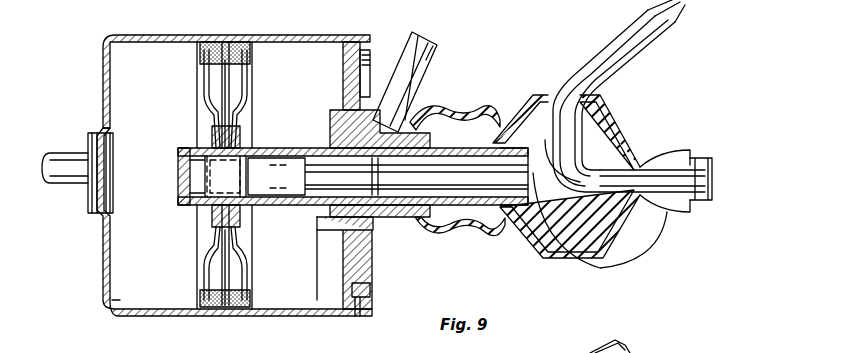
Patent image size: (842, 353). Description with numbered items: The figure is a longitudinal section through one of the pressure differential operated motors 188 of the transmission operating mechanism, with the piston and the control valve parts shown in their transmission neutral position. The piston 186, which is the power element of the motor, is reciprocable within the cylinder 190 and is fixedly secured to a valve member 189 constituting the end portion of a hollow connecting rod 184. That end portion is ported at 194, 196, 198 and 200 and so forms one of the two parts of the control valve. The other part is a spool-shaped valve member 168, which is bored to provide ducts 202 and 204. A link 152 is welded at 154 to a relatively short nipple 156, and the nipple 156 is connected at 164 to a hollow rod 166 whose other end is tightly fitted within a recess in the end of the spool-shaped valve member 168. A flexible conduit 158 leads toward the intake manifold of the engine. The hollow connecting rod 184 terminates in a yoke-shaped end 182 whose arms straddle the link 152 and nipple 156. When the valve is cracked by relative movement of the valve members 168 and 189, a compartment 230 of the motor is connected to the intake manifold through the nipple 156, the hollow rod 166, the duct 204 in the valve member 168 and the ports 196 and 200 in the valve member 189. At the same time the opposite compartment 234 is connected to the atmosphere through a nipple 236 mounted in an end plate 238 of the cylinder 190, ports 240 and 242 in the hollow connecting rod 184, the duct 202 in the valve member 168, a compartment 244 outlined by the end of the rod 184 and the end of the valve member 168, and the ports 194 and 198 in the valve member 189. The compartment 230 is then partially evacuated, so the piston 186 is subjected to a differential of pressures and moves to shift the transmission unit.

The link 152 is at (610, 192).
The weld 154 is at (583, 165).
The nipple 156 is at (605, 55).
The flexible conduit 158 is at (655, 22).
The connection 164 is at (540, 207).
The hollow rod 166 is at (320, 205).
The spool-shaped valve member 168 is at (215, 208).
The yoke-shaped end 182 is at (690, 168).
The hollow connecting rod 184 is at (292, 230).
The piston 186 is at (200, 72).
The pressure differential operated motor 188 is at (243, 33).
The valve member 189 is at (248, 138).
The cylinder 190 is at (140, 35).
The port 194 is at (195, 148).
The port 196 is at (262, 150).
The port 198 is at (210, 202).
The port 200 is at (262, 202).
The duct 202 is at (172, 170).
The duct 204 is at (514, 176).
The compartment 230 is at (325, 52).
The compartment 234 is at (120, 277).
The nipple 236 is at (433, 58).
The end plate 238 is at (375, 218).
The port 240 is at (486, 148).
The port 242 is at (468, 232).
The compartment 244 is at (190, 185).